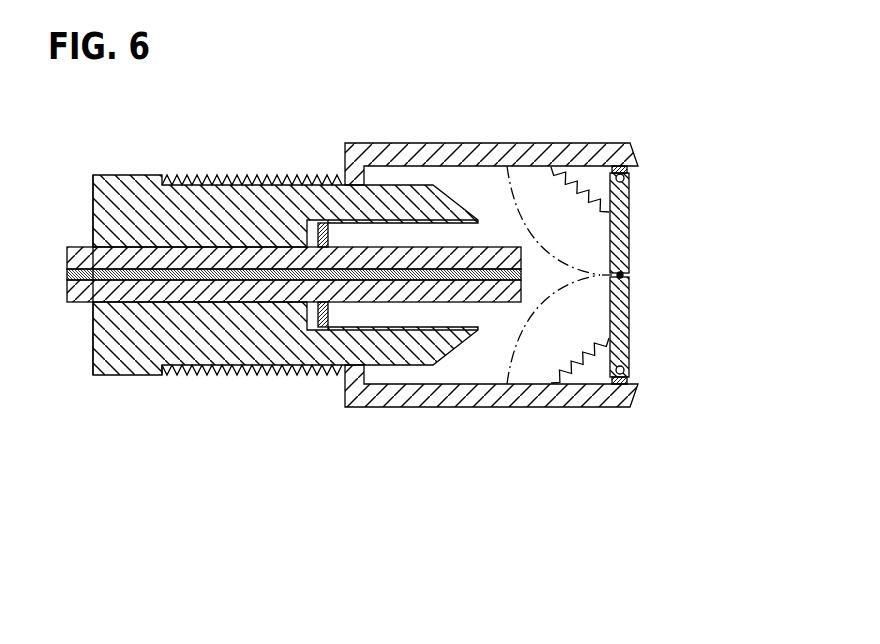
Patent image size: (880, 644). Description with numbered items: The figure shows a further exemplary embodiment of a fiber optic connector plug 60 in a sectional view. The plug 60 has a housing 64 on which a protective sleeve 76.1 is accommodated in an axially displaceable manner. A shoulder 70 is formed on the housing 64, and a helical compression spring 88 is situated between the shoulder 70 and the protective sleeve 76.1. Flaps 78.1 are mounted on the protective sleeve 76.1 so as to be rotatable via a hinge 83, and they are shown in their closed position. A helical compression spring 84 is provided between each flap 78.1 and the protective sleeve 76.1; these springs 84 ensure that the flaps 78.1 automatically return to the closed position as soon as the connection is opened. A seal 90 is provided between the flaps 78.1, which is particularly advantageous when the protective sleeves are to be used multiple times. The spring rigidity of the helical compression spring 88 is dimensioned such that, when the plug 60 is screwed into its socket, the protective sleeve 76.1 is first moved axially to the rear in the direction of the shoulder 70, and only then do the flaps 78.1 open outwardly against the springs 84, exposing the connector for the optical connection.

The plug 60 is at (390, 104).
The housing 64 is at (259, 213).
The shoulder 70 is at (170, 378).
The helical compression spring 88 is at (272, 378).
The protective sleeve 76.1 is at (463, 146).
The helical compression spring 84 is at (587, 187).
The flap 78.1 is at (620, 232).
The hinge 83 is at (626, 180).
The seal 90 is at (626, 275).